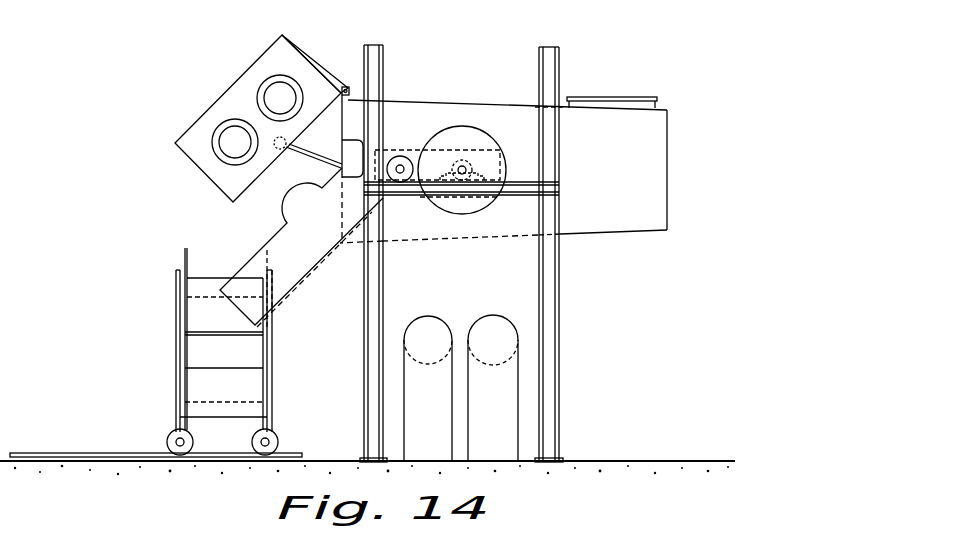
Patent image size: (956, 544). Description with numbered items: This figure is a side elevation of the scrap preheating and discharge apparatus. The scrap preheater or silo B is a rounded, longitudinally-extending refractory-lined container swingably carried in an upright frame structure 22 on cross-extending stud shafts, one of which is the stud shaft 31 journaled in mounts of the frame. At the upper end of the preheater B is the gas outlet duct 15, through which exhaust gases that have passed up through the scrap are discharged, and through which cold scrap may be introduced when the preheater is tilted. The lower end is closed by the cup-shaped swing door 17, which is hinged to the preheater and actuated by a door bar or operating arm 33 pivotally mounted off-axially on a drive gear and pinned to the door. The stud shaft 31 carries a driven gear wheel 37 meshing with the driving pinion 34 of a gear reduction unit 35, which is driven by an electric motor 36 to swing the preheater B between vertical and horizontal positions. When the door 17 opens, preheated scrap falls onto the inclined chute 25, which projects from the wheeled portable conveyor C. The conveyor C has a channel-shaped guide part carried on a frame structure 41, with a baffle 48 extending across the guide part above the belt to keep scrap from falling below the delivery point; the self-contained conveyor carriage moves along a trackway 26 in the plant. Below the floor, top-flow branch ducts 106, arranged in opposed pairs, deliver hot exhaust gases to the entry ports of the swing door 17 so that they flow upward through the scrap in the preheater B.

The gas outlet duct 15 is at (617, 97).
The swing door 17 is at (222, 95).
The upright frame structure 22 is at (560, 316).
The inclined chute 25 is at (269, 241).
The trackway 26 is at (109, 452).
The stud shaft 31 is at (463, 170).
The door bar or operating arm 33 is at (316, 162).
The driving pinion 34 is at (401, 182).
The gear reduction unit 35 is at (397, 149).
The electric motor 36 is at (346, 148).
The driven gear wheel 37 is at (480, 213).
The frame structure 41 is at (176, 372).
The baffle 48 is at (246, 335).
The top-flow branch ducts 106 is at (440, 444).
The scrap preheater or silo B is at (592, 177).
The wheeled portable conveyor C is at (230, 329).